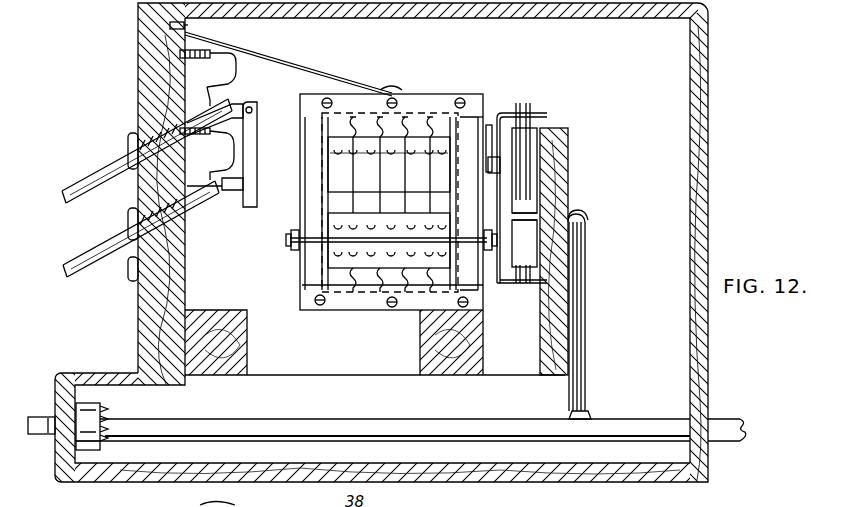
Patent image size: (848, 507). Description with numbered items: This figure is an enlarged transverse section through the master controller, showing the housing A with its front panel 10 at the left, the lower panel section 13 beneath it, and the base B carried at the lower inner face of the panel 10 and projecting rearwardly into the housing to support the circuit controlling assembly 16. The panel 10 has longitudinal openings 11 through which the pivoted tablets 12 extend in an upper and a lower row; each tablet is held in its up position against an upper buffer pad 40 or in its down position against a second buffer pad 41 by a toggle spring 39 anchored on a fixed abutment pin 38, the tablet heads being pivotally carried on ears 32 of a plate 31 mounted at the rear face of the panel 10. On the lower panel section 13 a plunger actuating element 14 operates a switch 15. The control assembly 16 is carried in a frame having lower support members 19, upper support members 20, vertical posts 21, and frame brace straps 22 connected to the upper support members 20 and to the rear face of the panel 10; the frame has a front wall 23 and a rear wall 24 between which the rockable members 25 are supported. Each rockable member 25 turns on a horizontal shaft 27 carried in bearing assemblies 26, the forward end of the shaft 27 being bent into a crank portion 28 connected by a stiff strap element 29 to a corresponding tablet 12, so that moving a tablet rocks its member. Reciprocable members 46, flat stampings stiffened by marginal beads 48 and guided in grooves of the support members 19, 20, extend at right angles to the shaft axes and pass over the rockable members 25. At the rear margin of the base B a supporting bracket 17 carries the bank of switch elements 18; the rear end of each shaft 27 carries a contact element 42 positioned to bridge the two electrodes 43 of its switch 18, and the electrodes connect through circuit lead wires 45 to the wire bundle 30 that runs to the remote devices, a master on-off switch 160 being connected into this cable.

The housing A is at (722, 68).
The base B is at (398, 378).
The front panel 10 is at (140, 45).
The longitudinal openings 11 is at (152, 133).
The tablets 12 is at (72, 262).
The lower panel section 13 is at (54, 472).
The plunger actuating elements 14 is at (40, 416).
The switches 15 is at (96, 404).
The circuit controlling assembly 16 is at (460, 85).
The supporting bracket 17 is at (567, 149).
The switch elements 18 is at (545, 138).
The lower support members 19 is at (302, 297).
The upper support members 20 is at (320, 100).
The vertical posts 21 is at (306, 131).
The frame brace straps 22 is at (300, 67).
The front wall 23 is at (300, 203).
The rear wall 24 is at (484, 190).
The rockable members 25 is at (338, 137).
The bearing assemblies 26 is at (293, 151).
The shaft 27 is at (467, 170).
The crank portion 28 is at (291, 177).
The strap element 29 is at (254, 109).
The wire bundle 30 is at (620, 420).
The plate 31 is at (204, 62).
The ears 32 is at (210, 176).
The abutment pin 38 is at (195, 52).
The toggle spring 39 is at (236, 70).
The upper buffer pad 40 is at (131, 147).
The second buffer pad 41 is at (140, 196).
The contact element 42 is at (540, 116).
The electrodes 43 is at (520, 104).
The circuit lead wires 45 is at (589, 224).
The reciprocable members 46 is at (431, 126).
The marginal beads 48 is at (378, 292).
The master on-off switch 160 is at (93, 452).